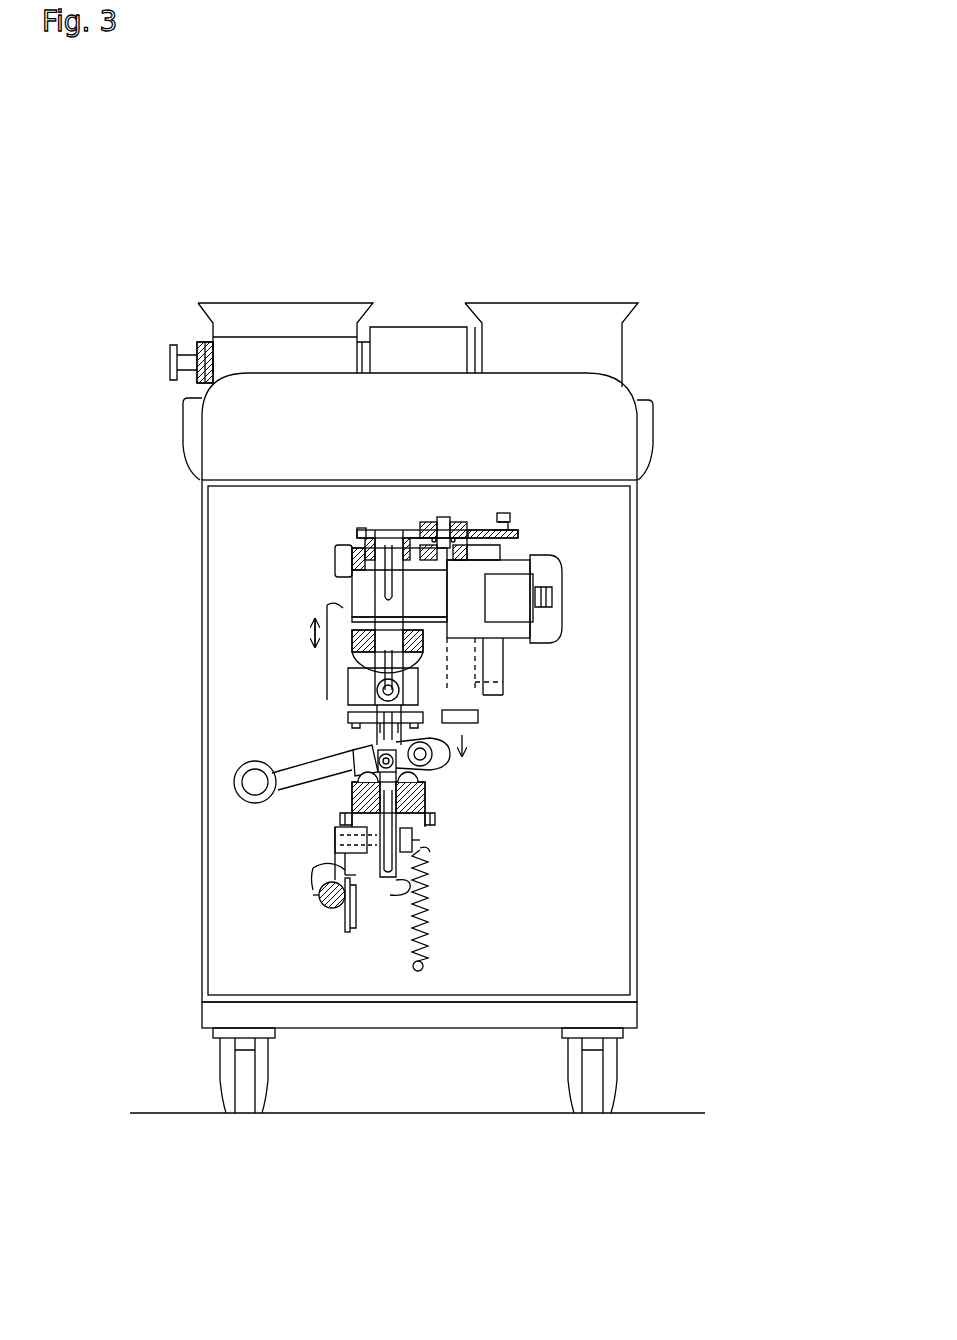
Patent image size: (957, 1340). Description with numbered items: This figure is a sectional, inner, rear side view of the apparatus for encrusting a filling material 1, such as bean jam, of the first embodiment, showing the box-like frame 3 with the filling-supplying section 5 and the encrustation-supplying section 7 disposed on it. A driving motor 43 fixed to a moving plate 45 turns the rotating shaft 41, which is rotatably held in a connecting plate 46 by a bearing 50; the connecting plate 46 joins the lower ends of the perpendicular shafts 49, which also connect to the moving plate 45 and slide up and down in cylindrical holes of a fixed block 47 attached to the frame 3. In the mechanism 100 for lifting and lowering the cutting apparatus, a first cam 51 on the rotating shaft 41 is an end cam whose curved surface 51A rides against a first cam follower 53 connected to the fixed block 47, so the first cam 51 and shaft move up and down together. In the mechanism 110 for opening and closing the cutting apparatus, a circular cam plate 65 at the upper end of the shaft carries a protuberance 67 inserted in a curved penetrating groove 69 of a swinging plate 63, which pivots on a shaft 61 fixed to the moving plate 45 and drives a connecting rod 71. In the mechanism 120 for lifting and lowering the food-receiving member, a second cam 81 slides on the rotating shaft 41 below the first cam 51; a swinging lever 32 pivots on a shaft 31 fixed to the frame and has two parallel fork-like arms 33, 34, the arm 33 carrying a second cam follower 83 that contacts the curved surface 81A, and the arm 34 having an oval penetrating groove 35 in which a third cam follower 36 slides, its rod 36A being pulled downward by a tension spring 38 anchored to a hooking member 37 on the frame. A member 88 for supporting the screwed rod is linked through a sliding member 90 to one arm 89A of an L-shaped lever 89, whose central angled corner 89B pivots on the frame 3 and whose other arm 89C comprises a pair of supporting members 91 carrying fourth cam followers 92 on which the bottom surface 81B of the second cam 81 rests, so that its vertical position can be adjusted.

The apparatus for encrusting a filling material 1 is at (655, 280).
The frame 3 is at (605, 578).
The filling-supplying section 5 is at (550, 328).
The encrustation-supplying section 7 is at (266, 345).
The mechanism for opening and closing the cutting apparatus 110 is at (432, 508).
The shaft 61 is at (412, 527).
The connecting rod 71 is at (447, 518).
The swinging plate 63 is at (357, 530).
The driving motor 43 is at (510, 520).
The moving plate 45 is at (352, 549).
The fixed block 47 is at (343, 608).
The cam plate 65 is at (354, 541).
The penetrating groove 69 is at (406, 527).
The protuberance 67 is at (392, 533).
The connecting plate 46 is at (348, 714).
The bearing 50 is at (377, 752).
The first cam 51 is at (557, 580).
The curved surface 51A is at (522, 645).
The perpendicular shafts 49 is at (455, 668).
The first cam follower 53 is at (462, 708).
The mechanism for lifting and lowering the cutting apparatus 100 is at (512, 711).
The swinging lever 32 is at (255, 782).
The shaft 31 is at (293, 757).
The fork-like arm 33 is at (375, 738).
The second cam follower 83 is at (318, 768).
The third cam follower 36 is at (437, 745).
The fork-like arm 34 is at (430, 763).
The rod 36A is at (427, 779).
The penetrating groove 35 is at (436, 814).
The mechanism for lifting and lowering the food-receiving member 120 is at (470, 822).
The second cam 81 is at (337, 813).
The curved surface 81A is at (345, 802).
The bottom surface 81B is at (425, 862).
The rotating shaft 41 is at (378, 862).
The hooking member 37 is at (418, 972).
The tension spring 38 is at (430, 948).
The other arm 89C is at (422, 826).
The member for supporting the screwed rod 88 is at (330, 908).
The sliding member 90 is at (347, 932).
The L-shaped lever 89 is at (315, 890).
The one arm 89A is at (313, 905).
The central angled corner 89B is at (330, 863).
The supporting members 91 is at (342, 818).
The fourth cam followers 92 is at (352, 822).